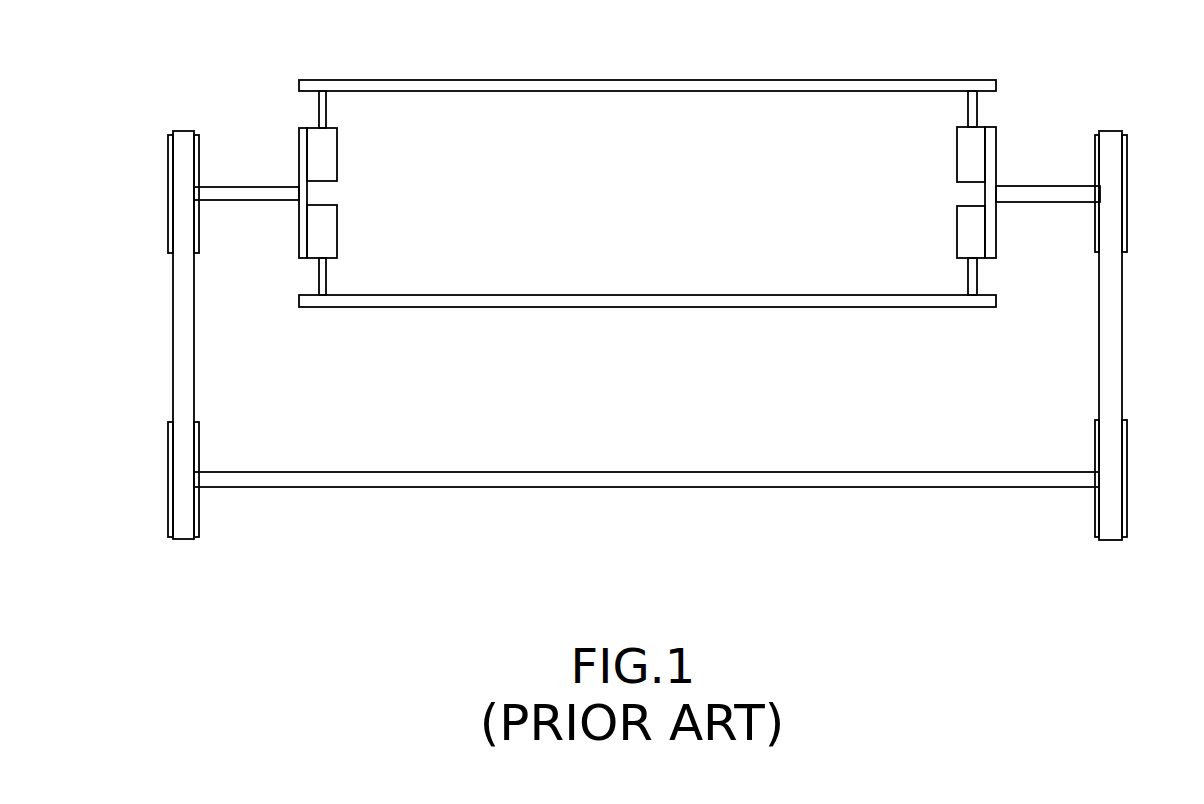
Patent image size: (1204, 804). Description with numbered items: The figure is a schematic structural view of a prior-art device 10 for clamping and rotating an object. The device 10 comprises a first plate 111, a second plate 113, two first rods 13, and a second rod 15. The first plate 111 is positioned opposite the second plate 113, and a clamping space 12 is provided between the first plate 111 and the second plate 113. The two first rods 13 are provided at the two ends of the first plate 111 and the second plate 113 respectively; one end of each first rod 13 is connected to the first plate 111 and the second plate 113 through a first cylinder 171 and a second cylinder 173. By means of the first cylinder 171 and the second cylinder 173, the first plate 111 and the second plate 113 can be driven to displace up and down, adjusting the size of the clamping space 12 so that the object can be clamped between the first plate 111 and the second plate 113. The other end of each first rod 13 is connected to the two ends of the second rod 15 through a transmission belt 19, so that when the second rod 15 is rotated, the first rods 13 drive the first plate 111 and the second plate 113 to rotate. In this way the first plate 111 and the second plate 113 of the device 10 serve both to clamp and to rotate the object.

The device 10 is at (210, 58).
The clamping space 12 is at (659, 195).
The first plate 111 is at (798, 82).
The second plate 113 is at (786, 305).
The first rod 13 is at (231, 190).
The second rod 15 is at (380, 483).
The transmission belt 19 is at (173, 333).
The first cylinder 171 is at (332, 158).
The second cylinder 173 is at (333, 233).